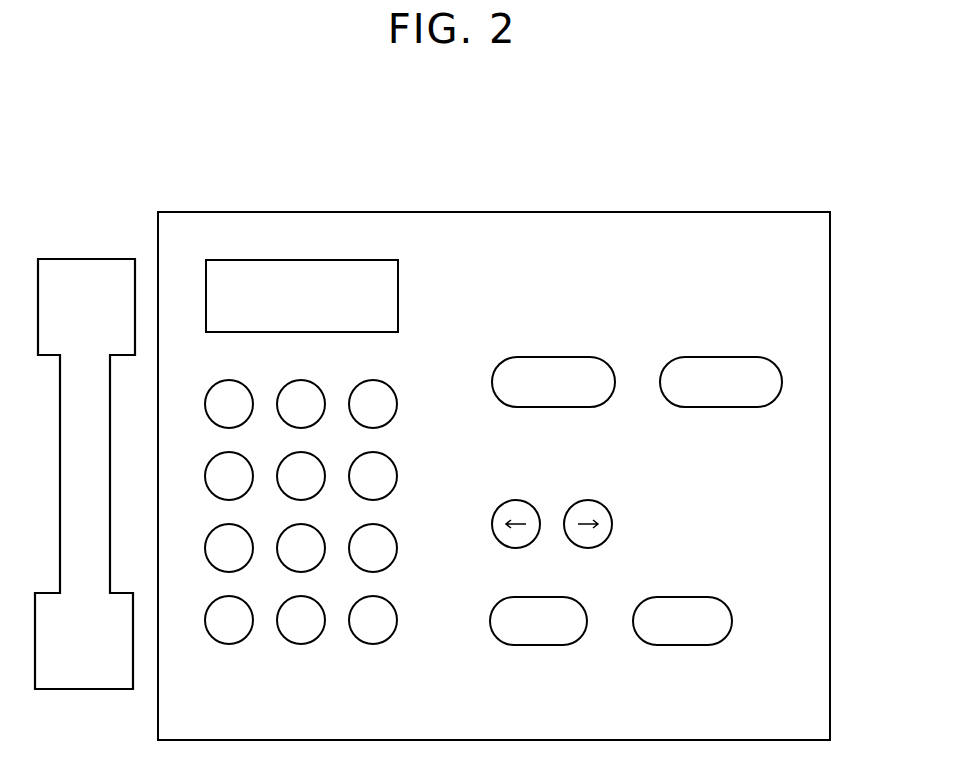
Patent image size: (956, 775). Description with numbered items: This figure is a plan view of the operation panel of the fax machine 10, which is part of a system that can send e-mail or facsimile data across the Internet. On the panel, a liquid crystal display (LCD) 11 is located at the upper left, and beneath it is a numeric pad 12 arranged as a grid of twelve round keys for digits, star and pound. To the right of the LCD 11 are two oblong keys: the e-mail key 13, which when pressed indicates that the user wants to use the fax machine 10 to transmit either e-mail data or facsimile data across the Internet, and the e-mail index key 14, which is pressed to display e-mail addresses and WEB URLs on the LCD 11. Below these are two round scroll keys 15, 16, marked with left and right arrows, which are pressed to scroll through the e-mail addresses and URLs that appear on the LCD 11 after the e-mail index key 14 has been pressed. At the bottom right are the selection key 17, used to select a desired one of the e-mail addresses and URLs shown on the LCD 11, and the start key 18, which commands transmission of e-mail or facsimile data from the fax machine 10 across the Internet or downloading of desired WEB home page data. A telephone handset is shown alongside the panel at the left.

The fax machine 10 is at (543, 212).
The liquid crystal display (LCD) 11 is at (350, 258).
The numeric pad 12 is at (350, 380).
The e-mail key 13 is at (550, 357).
The e-mail index key 14 is at (718, 357).
The scroll key 15 is at (517, 498).
The scroll key 16 is at (587, 498).
The selection key 17 is at (538, 597).
The start key 18 is at (682, 597).